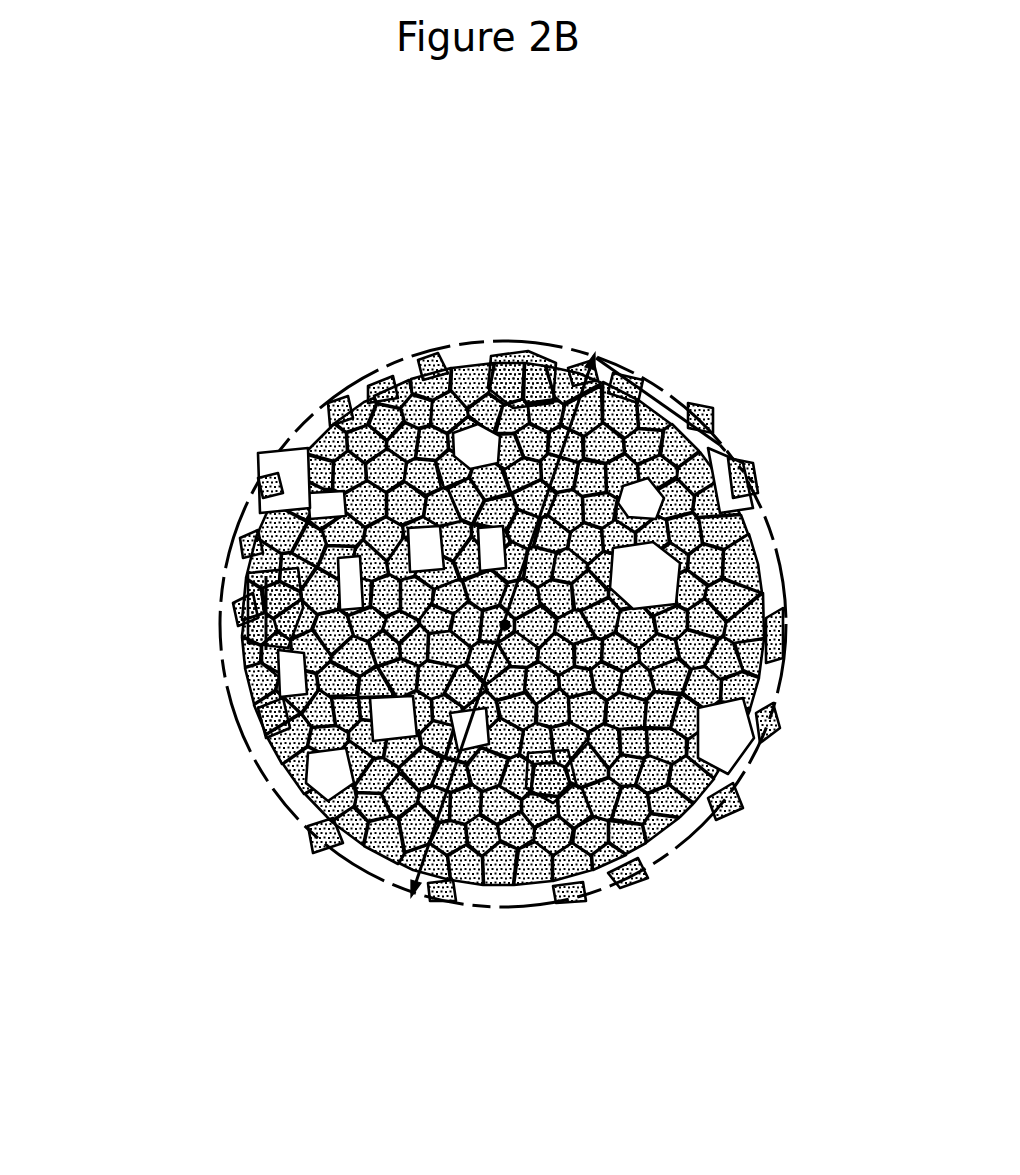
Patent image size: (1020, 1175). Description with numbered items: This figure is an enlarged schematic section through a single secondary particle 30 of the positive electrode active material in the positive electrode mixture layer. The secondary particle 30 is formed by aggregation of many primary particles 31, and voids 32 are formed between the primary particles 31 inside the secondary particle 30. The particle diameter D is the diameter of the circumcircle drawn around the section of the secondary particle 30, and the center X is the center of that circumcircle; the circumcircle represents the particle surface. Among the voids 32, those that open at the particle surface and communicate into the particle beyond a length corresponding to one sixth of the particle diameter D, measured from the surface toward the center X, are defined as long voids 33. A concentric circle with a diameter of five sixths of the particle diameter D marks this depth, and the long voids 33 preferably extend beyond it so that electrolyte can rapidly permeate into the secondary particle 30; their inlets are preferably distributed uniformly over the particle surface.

The secondary particle 30 is at (742, 204).
The primary particle 31 is at (500, 345).
The void in the secondary particle 32 is at (531, 768).
The long void 33 is at (248, 572).
The particle diameter D is at (353, 820).
The center of the circumcircle X is at (500, 616).